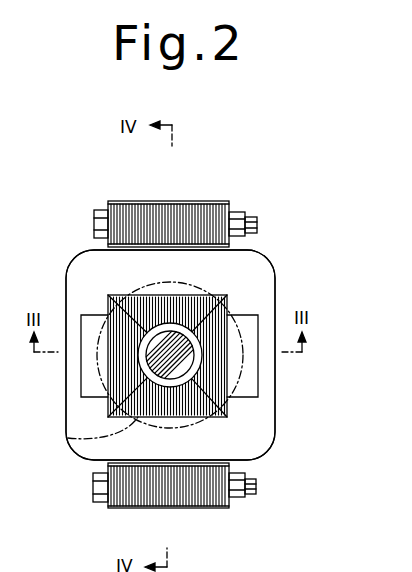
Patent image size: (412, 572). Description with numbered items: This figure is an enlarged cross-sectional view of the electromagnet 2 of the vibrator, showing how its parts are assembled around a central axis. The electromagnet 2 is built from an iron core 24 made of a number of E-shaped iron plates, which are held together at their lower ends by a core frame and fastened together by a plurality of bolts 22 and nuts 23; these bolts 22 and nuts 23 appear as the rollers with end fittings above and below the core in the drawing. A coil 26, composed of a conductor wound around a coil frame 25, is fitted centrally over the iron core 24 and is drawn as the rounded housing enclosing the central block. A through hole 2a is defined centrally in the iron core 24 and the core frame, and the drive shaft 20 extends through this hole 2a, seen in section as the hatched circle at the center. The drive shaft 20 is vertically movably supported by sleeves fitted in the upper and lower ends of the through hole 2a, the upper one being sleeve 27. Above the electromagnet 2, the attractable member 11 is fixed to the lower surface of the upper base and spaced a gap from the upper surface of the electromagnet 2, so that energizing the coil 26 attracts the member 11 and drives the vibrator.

The electromagnet 2 is at (291, 223).
The through hole 2a is at (227, 307).
The attractable member 11 is at (68, 438).
The drive shaft 20 is at (227, 408).
The bolts 22 is at (95, 224).
The nuts 23 is at (238, 209).
The iron core 24 is at (175, 207).
The coil frame 25 is at (170, 355).
The coil 26 is at (259, 269).
The sleeve 27 is at (112, 310).